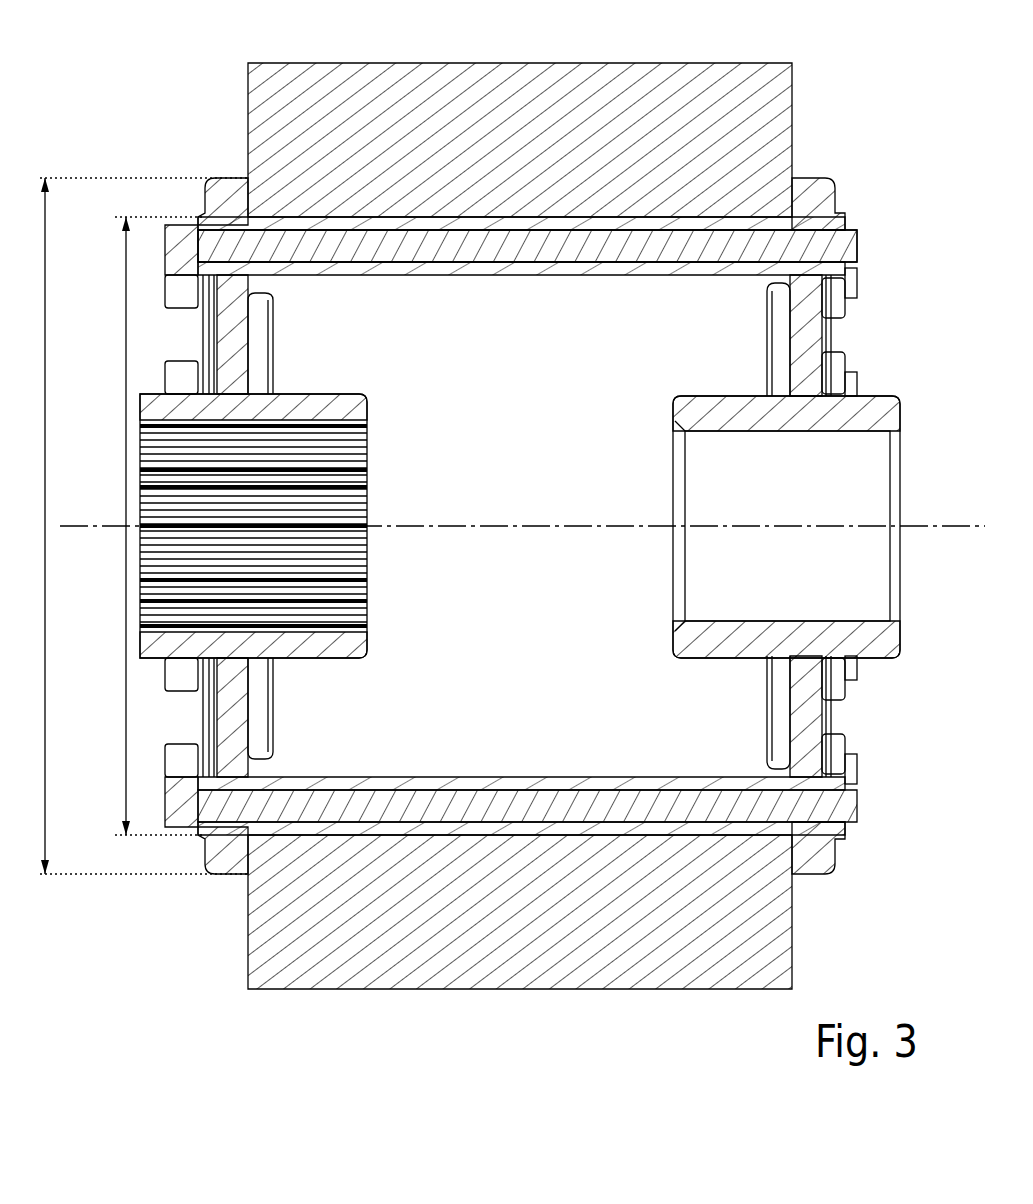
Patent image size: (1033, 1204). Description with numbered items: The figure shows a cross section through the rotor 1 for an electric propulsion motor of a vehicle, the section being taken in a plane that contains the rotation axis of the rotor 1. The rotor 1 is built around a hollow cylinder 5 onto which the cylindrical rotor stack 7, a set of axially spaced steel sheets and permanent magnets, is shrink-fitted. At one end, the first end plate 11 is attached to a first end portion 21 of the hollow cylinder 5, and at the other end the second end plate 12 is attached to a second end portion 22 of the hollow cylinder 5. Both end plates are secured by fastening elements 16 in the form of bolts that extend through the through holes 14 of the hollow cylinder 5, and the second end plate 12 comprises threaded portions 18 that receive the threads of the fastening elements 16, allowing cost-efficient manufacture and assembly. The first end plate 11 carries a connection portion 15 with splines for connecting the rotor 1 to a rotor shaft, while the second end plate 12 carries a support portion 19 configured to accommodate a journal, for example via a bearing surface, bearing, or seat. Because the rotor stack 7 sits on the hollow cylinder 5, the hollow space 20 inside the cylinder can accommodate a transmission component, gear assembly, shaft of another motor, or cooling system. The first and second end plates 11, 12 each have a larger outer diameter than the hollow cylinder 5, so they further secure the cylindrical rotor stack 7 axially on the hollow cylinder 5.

The rotor 1 is at (160, 50).
The hollow cylinder 5 is at (505, 274).
The cylindrical rotor stack 7 is at (762, 93).
The first end plate 11 is at (232, 337).
The second end plate 12 is at (803, 345).
The through holes 14 is at (570, 789).
The connection portion 15 is at (347, 621).
The fastening elements 16 is at (487, 806).
The threaded portions 18 is at (850, 808).
The support portion 19 is at (693, 623).
The hollow space 20 is at (530, 465).
The first end portion 21 is at (247, 222).
The second end portion 22 is at (813, 200).